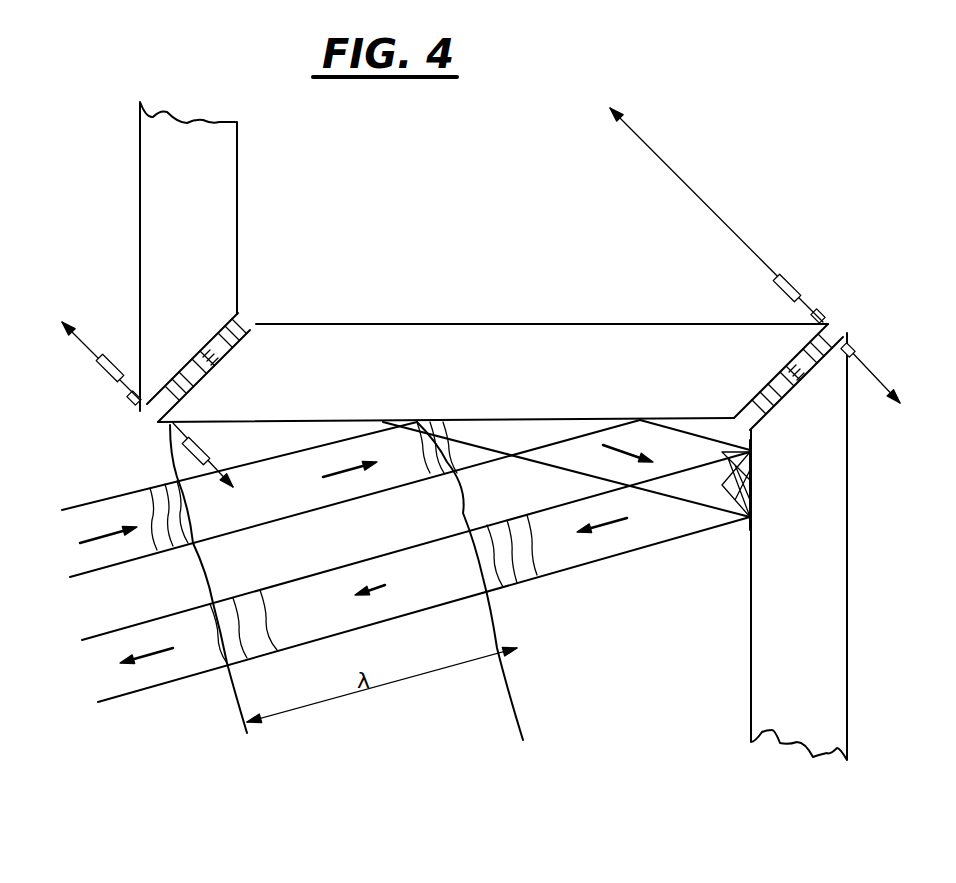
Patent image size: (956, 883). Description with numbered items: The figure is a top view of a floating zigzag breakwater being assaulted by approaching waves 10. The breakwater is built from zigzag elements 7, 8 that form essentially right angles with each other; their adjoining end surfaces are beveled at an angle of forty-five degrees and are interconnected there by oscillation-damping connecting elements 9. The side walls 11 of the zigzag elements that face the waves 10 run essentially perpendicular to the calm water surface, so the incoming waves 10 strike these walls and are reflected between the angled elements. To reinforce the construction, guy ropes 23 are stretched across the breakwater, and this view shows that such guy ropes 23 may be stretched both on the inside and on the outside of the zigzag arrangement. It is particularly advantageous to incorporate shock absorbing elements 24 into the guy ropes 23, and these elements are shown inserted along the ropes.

The zigzag element 7 is at (623, 335).
The zigzag element 8 is at (758, 607).
The connecting element 9 is at (243, 318).
The waves 10 is at (356, 542).
The side wall 11 is at (748, 552).
The guy rope 23 is at (688, 188).
The shock absorbing element 24 is at (775, 285).